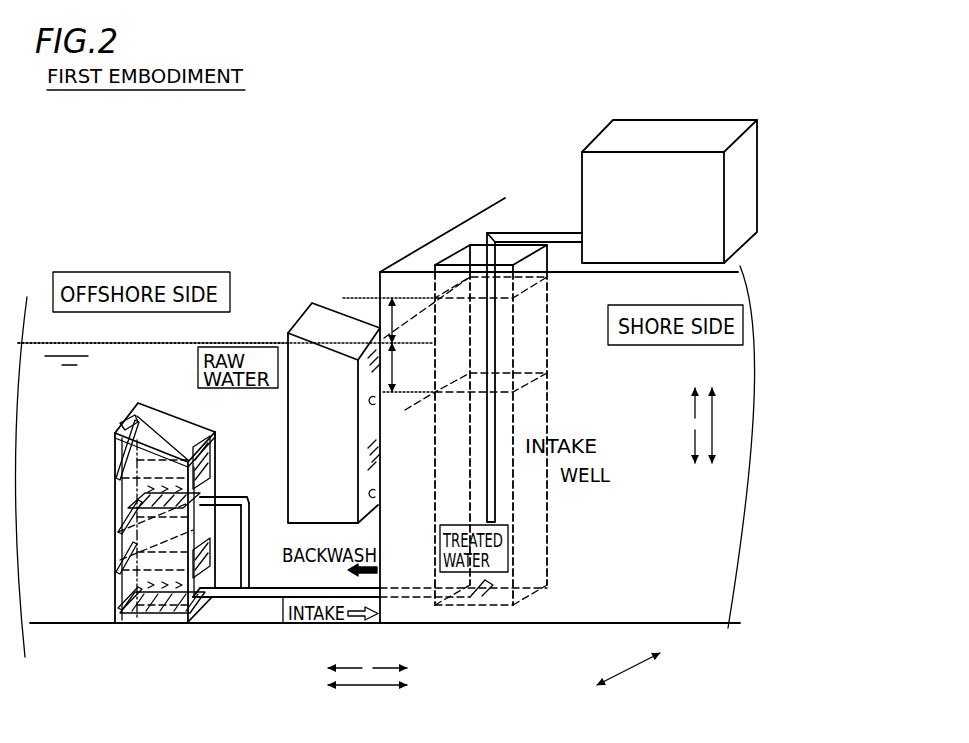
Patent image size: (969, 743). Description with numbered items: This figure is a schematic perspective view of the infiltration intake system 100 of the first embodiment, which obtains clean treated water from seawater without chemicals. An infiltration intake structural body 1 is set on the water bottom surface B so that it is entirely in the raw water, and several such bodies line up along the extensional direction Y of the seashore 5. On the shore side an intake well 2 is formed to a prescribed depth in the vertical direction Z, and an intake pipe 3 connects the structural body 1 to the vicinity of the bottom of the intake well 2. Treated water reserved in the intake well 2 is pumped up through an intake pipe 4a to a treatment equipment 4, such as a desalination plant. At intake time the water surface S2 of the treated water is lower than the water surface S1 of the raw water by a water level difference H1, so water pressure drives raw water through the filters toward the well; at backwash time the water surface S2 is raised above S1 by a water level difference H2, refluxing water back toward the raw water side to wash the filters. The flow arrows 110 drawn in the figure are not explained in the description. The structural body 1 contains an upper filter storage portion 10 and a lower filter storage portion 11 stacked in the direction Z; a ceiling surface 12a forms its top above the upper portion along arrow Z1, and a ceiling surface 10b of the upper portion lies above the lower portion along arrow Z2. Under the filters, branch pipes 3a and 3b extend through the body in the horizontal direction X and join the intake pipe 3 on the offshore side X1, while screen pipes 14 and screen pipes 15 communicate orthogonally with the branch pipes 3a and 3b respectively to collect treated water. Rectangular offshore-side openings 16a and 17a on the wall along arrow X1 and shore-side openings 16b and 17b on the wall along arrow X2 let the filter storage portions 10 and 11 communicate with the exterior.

The infiltration intake system 100 is at (524, 140).
The infiltration intake structural body 1 is at (312, 295).
The intake well 2 is at (557, 367).
The intake pipe 3 is at (280, 597).
The branch pipe 3a is at (222, 503).
The branch pipe 3b is at (230, 597).
The treatment equipment 4 is at (700, 133).
The intake pipe 4a is at (557, 242).
The seashore 5 is at (415, 248).
The filter storage portion 10 is at (213, 482).
The ceiling surface 10b is at (248, 500).
The filter storage portion 11 is at (200, 577).
The ceiling surface 12a is at (173, 448).
The screen pipe 14 is at (115, 467).
The screen pipe 15 is at (118, 575).
The offshore-side opening 16a is at (115, 438).
The shore-side opening 16b is at (195, 443).
The offshore-side opening 17a is at (115, 537).
The shore-side opening 17b is at (205, 548).
The water flow direction 110 is at (112, 403).
The water surface of the raw water S1 is at (257, 342).
The water surface of the treated water S2 is at (462, 297).
The water level difference H1 is at (409, 367).
The water level difference H2 is at (389, 320).
The water bottom surface B is at (50, 618).
The vertical direction Z is at (724, 425).
The upward direction arrow Z1 is at (680, 404).
The downward direction arrow Z2 is at (680, 446).
The horizontal direction X is at (367, 699).
The offshore side X1 is at (345, 655).
The shore side X2 is at (390, 655).
The extensional direction of the seashore Y is at (628, 674).